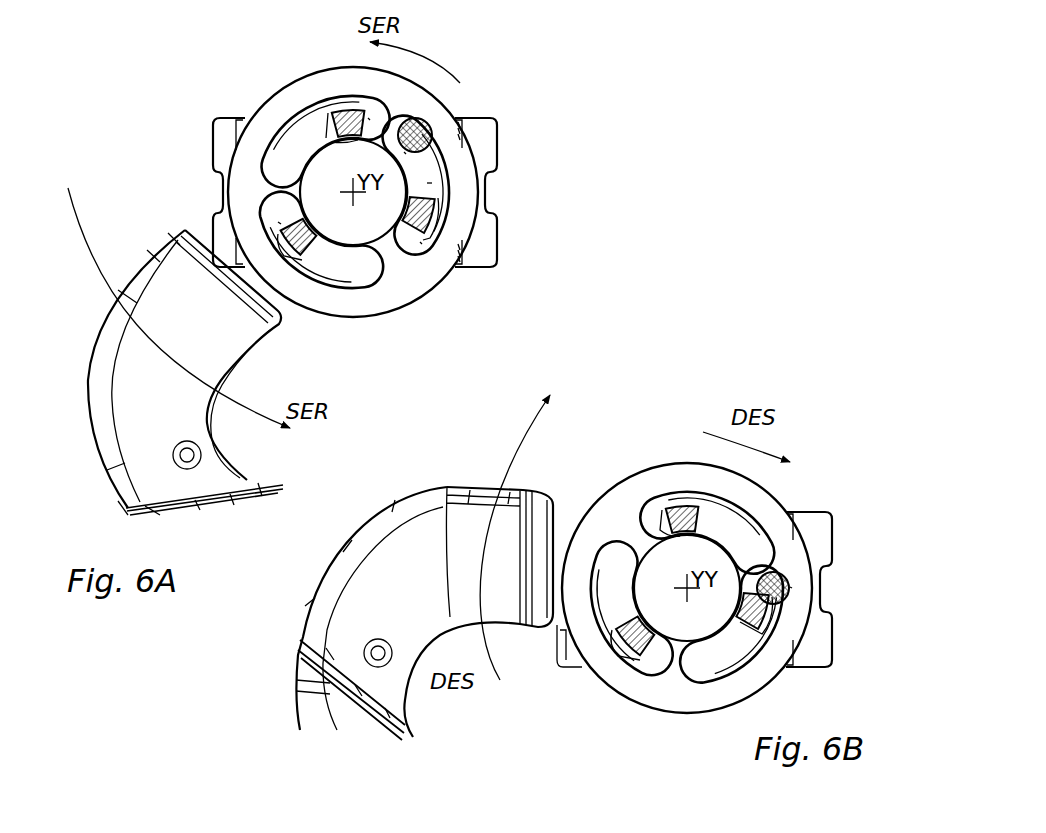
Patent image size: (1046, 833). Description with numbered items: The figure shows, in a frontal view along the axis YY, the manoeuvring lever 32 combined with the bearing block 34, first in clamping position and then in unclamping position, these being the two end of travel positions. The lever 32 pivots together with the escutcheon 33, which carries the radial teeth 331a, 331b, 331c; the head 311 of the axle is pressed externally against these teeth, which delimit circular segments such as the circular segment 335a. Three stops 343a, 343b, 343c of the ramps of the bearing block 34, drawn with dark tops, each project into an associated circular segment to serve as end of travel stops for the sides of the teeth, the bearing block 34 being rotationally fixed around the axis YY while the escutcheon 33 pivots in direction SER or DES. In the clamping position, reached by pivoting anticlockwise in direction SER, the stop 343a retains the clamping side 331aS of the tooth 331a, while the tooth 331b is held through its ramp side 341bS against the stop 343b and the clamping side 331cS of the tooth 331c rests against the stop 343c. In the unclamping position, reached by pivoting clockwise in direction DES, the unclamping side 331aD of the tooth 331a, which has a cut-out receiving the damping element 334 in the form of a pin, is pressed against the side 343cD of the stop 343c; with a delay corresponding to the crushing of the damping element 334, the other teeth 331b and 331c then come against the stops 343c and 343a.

In FIG. 6A, the manoeuvring lever 32 is at (132, 366).
In FIG. 6B, the manoeuvring lever 32 is at (352, 556).
In FIG. 6A, the escutcheon 33 is at (230, 142).
In FIG. 6B, the escutcheon 33 is at (615, 470).
In FIG. 6A, the bearing block 34 is at (500, 150).
In FIG. 6B, the bearing block 34 is at (808, 500).
In FIG. 6A, the head of the axle 311 is at (368, 225).
In FIG. 6B, the head of the axle 311 is at (703, 622).
In FIG. 6A, the tooth 331a is at (420, 109).
In FIG. 6B, the tooth 331a is at (800, 555).
In FIG. 6A, the tooth 331b is at (286, 196).
In FIG. 6B, the tooth 331b is at (640, 536).
In FIG. 6A, the tooth 331c is at (418, 273).
In FIG. 6B, the tooth 331c is at (694, 682).
In FIG. 6A, the damping element 334 is at (428, 122).
In FIG. 6B, the damping element 334 is at (790, 578).
In FIG. 6A, the circular segment 335a is at (427, 183).
In FIG. 6A, the stop 343a is at (330, 122).
In FIG. 6B, the stop 343a is at (669, 512).
In FIG. 6A, the stop 343b is at (305, 262).
In FIG. 6B, the stop 343b is at (624, 650).
In FIG. 6A, the stop 343c is at (440, 223).
In FIG. 6B, the stop 343c is at (770, 618).
In FIG. 6A, the clamping side of tooth 331a 331aS is at (362, 114).
In FIG. 6A, the unclamping side of tooth 331a 331aD is at (407, 153).
In FIG. 6A, the clamping side of tooth 331c 331cS is at (421, 242).
In FIG. 6A, the pad position (SER) 341bS is at (280, 223).
In FIG. 6B, the unclamping-side face of stop 343c 343cD is at (792, 588).